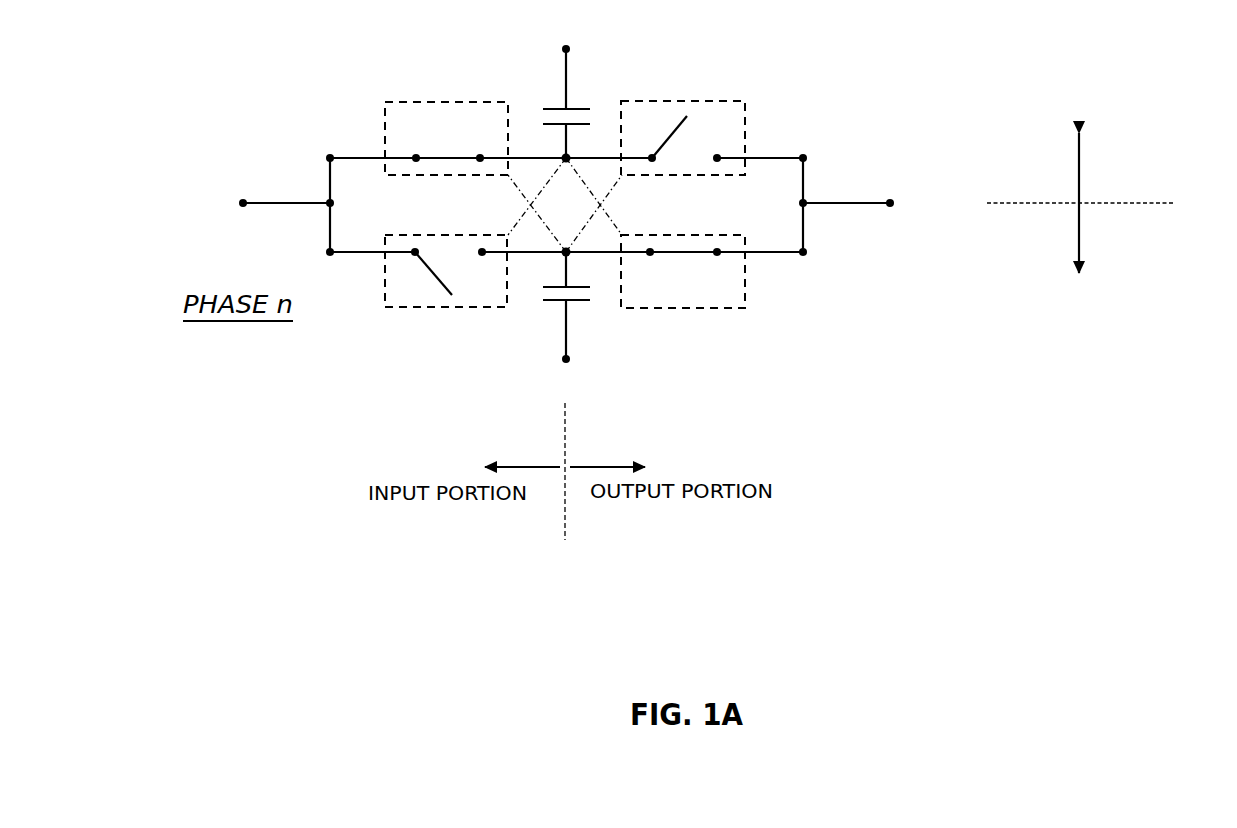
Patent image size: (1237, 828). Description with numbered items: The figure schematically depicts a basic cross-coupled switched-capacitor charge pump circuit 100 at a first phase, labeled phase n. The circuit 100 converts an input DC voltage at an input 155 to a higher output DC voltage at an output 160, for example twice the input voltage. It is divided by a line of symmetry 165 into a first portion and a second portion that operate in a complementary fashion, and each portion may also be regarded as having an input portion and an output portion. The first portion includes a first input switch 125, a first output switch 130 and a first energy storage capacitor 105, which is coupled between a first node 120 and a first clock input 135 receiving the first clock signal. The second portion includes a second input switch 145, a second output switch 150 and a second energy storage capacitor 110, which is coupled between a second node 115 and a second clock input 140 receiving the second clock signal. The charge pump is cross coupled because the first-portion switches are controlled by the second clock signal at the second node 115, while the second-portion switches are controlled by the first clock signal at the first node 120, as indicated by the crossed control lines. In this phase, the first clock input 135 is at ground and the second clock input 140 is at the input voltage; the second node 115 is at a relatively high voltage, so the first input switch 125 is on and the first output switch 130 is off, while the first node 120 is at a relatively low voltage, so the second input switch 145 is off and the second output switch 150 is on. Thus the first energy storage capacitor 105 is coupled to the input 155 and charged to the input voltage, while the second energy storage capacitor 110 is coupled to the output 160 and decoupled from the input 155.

The circuit 100 is at (298, 45).
The energy storage capacitor 105 is at (551, 105).
The energy storage capacitor 110 is at (541, 308).
The second node 115 is at (570, 262).
The first node 120 is at (561, 151).
The input switch 125 is at (453, 97).
The output switch 130 is at (690, 97).
The first clock input 135 is at (571, 59).
The second clock input 140 is at (571, 333).
The input switch 145 is at (453, 316).
The output switch 150 is at (690, 315).
The input 155 is at (295, 197).
The output 160 is at (873, 197).
The line of symmetry 165 is at (1040, 201).